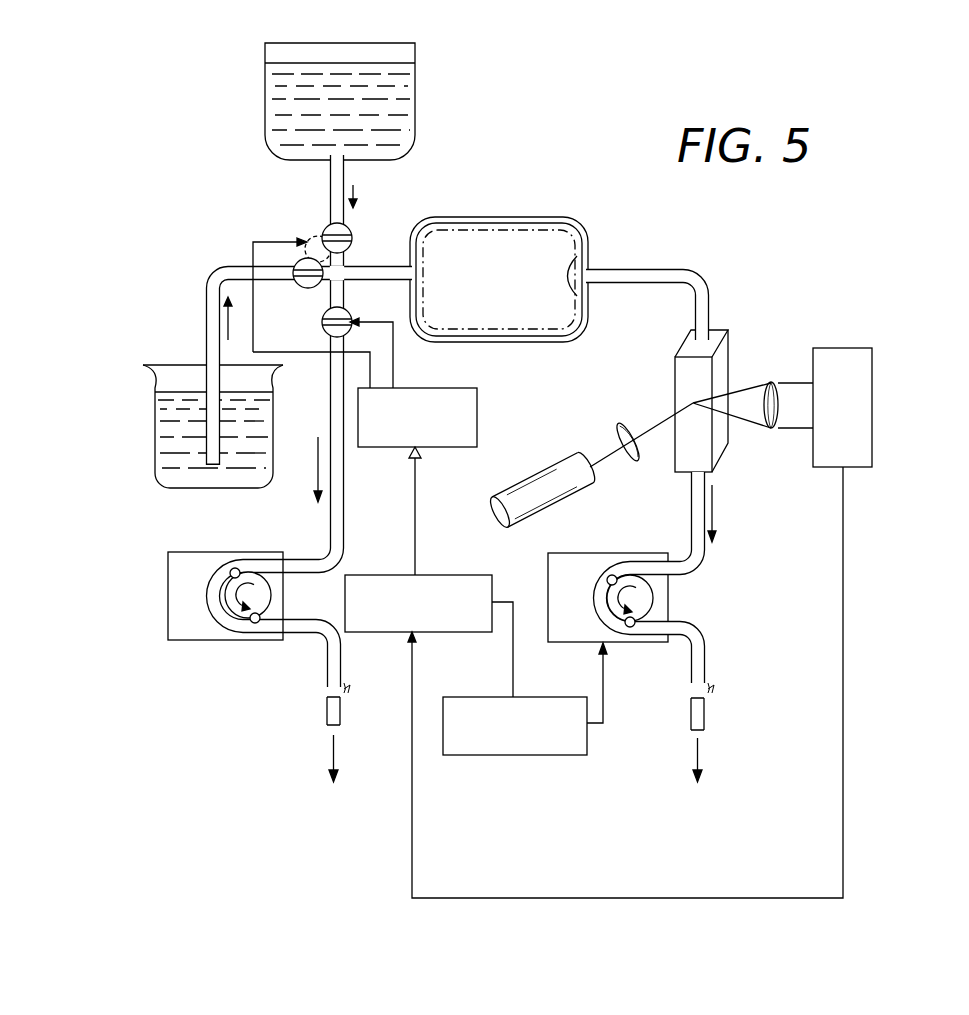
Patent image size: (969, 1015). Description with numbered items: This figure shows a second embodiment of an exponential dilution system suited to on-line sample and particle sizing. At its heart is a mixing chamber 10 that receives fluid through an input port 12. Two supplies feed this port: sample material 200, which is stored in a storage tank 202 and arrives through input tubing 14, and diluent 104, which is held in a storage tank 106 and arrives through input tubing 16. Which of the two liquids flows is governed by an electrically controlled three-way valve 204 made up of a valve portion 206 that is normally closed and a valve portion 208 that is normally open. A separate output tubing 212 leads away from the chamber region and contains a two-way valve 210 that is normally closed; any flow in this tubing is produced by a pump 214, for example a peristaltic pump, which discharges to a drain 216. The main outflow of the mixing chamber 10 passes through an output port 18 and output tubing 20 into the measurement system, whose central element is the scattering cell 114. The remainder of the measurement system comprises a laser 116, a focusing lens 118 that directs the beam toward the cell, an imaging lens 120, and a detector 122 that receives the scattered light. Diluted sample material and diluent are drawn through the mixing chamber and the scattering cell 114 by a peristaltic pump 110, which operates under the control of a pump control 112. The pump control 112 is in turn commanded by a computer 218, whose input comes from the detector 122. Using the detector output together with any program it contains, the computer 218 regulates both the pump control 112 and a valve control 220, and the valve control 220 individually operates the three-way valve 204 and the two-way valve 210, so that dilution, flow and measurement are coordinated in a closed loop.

The mixing chamber 10 is at (512, 238).
The input port 12 is at (440, 258).
The input tubing 14 is at (330, 198).
The input tubing 16 is at (210, 272).
The output port 18 is at (575, 262).
The output tubing 20 is at (700, 275).
The diluent 104 is at (175, 395).
The storage tank 106 is at (150, 435).
The peristaltic pump 110 is at (588, 565).
The pump control 112 is at (490, 757).
The scattering cell 114 is at (733, 338).
The laser 116 is at (585, 478).
The focusing lens 118 is at (626, 426).
The imaging lens 120 is at (772, 382).
The detector 122 is at (845, 348).
The sample material 200 is at (405, 135).
The storage tank 202 is at (418, 60).
The three-way valve 204 is at (308, 240).
The valve portion 206 is at (348, 230).
The valve portion 208 is at (310, 290).
The two-way valve 210 is at (368, 303).
The output tubing 212 is at (330, 415).
The pump 214 is at (278, 552).
The drain 216 is at (327, 712).
The computer 218 is at (440, 575).
The valve control 220 is at (440, 390).